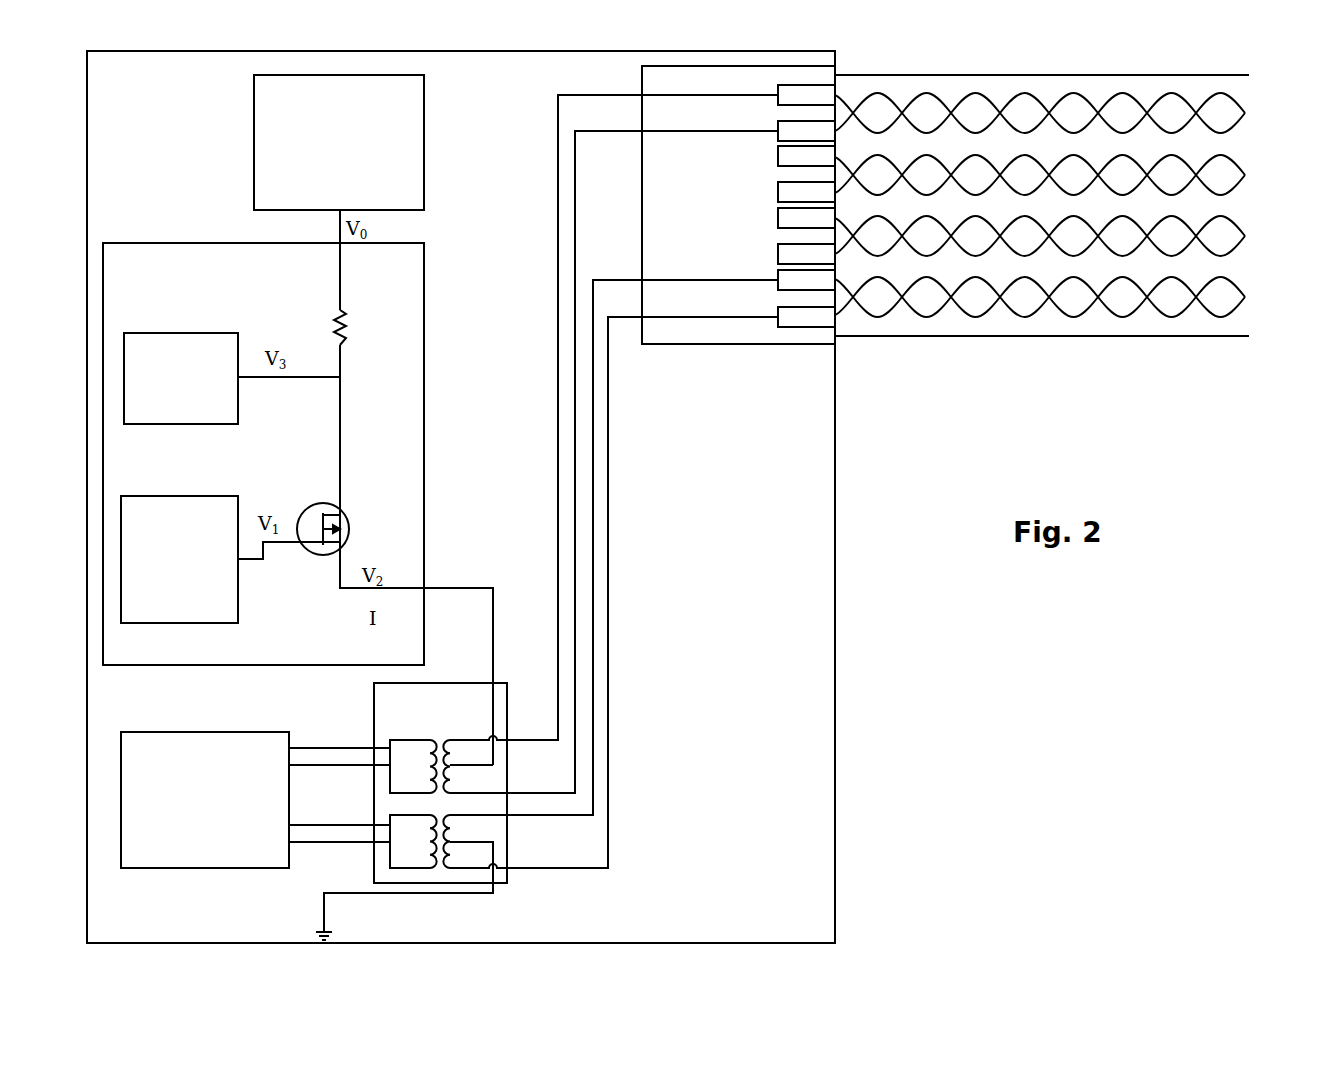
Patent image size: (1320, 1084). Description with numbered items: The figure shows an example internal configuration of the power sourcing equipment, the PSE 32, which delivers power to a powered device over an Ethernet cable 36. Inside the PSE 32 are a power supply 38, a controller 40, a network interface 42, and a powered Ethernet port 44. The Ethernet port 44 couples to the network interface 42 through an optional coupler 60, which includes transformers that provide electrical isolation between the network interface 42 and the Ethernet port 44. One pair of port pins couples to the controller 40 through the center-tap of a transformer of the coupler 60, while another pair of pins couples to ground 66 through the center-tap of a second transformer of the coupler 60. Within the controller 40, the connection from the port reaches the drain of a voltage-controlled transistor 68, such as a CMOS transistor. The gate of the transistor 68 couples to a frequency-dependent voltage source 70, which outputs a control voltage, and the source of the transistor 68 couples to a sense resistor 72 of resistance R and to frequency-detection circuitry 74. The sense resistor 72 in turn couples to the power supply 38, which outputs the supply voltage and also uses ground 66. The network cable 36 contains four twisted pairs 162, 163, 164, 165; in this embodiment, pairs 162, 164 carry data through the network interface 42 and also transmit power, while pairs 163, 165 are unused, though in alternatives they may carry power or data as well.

The PSE 32 is at (461, 497).
The power supply 38 is at (339, 142).
The controller 40 is at (263, 454).
The network interface 42 is at (205, 800).
The powered Ethernet port 44 is at (738, 205).
The coupler 60 is at (440, 783).
The ground 66 is at (404, 891).
The voltage-controlled transistor 68 is at (323, 515).
The frequency-dependent voltage source 70 is at (179, 559).
The sense resistor 72 is at (326, 327).
The frequency-detection circuitry 74 is at (181, 378).
The Ethernet cable 36 is at (1267, 261).
The twisted pair 162 is at (1040, 113).
The twisted pair 163 is at (1040, 175).
The twisted pair 164 is at (1040, 297).
The twisted pair 165 is at (1040, 236).